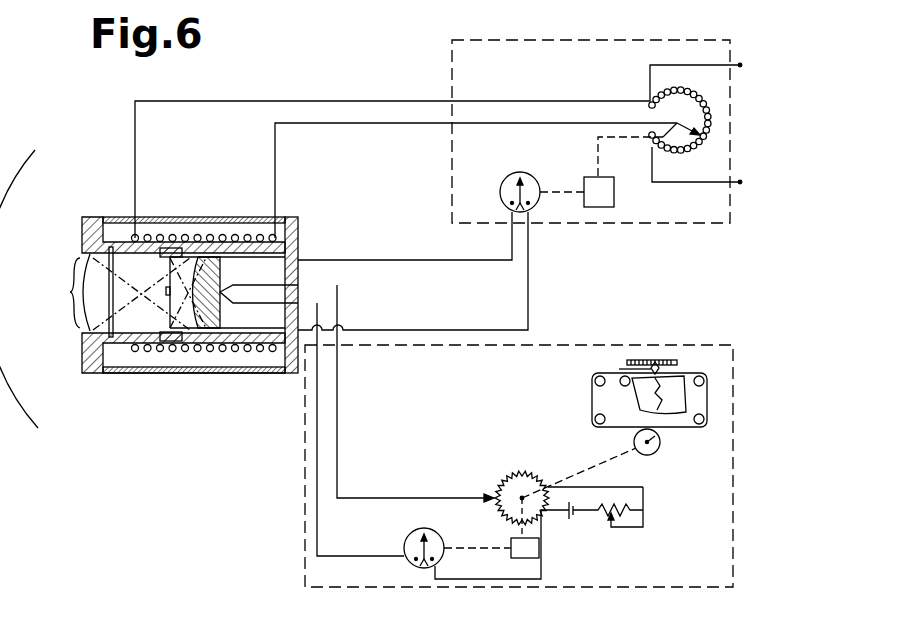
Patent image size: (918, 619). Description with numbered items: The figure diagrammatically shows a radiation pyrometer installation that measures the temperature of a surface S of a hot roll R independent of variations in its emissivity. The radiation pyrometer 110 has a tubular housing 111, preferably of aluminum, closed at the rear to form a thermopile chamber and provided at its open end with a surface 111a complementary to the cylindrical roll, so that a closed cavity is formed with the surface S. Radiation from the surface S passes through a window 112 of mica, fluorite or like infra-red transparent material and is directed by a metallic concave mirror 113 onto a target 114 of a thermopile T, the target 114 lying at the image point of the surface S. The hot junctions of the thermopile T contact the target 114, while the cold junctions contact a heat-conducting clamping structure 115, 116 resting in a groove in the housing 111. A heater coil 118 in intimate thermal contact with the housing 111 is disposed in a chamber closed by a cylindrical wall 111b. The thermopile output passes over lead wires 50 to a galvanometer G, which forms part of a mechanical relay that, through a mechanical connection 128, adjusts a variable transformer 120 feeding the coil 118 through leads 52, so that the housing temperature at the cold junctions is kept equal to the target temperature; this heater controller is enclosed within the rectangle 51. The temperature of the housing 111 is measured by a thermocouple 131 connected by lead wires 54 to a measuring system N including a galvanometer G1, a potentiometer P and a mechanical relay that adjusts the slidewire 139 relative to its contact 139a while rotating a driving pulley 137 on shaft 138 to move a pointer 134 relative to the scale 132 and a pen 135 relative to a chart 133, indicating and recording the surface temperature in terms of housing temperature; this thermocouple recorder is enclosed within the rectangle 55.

The roll R is at (60, 184).
The surface S is at (70, 292).
The thermopile T is at (170, 268).
The measuring system N is at (358, 536).
The potentiometer P is at (611, 498).
The galvanometer G is at (500, 192).
The galvanometer G1 is at (412, 538).
The lead wires 50 is at (433, 260).
The rectangle 51 is at (585, 40).
The leads 52 is at (334, 101).
The lead wires 54 is at (338, 410).
The rectangle 55 is at (586, 345).
The radiation pyrometer 110 is at (210, 199).
The tubular housing 111 is at (96, 224).
The surface 111a is at (84, 233).
The cylindrical wall 111b is at (133, 372).
The window 112 is at (113, 295).
The concave mirror 113 is at (208, 291).
The target 114 is at (149, 293).
The clamping ring 115 is at (164, 344).
The clamping ring 116 is at (180, 344).
The heater coil 118 is at (258, 233).
The variable transformer 120 is at (702, 148).
The mechanical connection 128 is at (597, 160).
The thermocouple 131 is at (230, 289).
The scale 132 is at (660, 361).
The chart 133 is at (676, 380).
The pointer 134 is at (622, 363).
The pen 135 is at (654, 378).
The driving pulley 137 is at (661, 449).
The shaft 138 is at (569, 473).
The slidewire 139 is at (520, 473).
The contact 139a is at (492, 496).